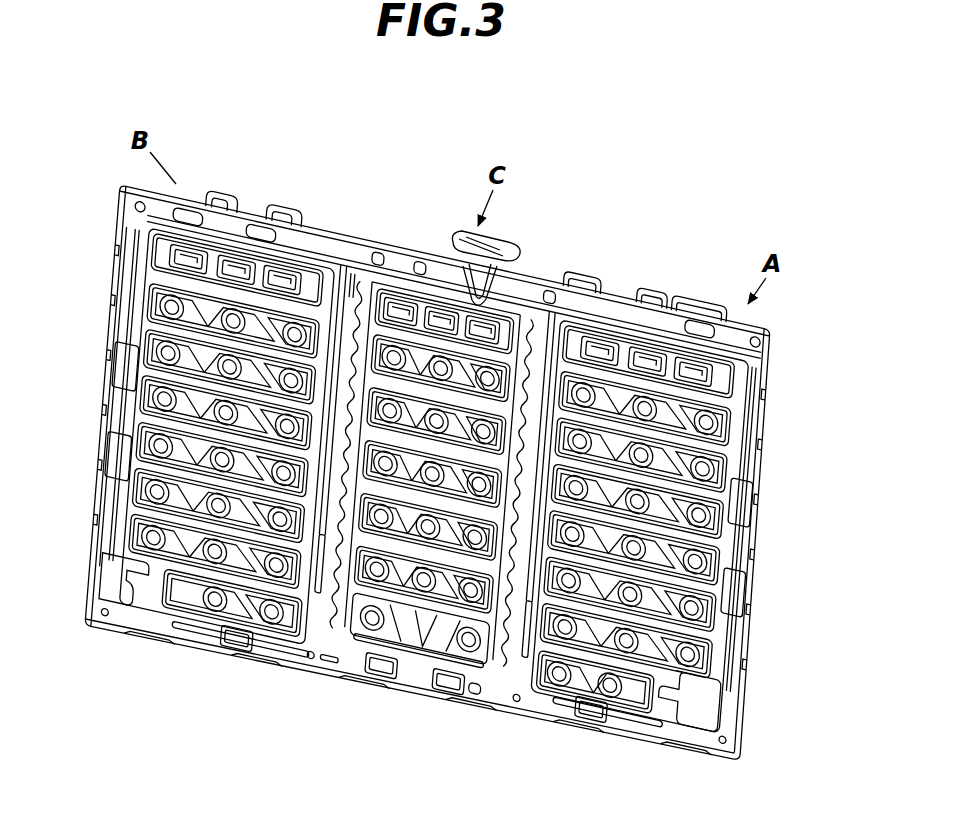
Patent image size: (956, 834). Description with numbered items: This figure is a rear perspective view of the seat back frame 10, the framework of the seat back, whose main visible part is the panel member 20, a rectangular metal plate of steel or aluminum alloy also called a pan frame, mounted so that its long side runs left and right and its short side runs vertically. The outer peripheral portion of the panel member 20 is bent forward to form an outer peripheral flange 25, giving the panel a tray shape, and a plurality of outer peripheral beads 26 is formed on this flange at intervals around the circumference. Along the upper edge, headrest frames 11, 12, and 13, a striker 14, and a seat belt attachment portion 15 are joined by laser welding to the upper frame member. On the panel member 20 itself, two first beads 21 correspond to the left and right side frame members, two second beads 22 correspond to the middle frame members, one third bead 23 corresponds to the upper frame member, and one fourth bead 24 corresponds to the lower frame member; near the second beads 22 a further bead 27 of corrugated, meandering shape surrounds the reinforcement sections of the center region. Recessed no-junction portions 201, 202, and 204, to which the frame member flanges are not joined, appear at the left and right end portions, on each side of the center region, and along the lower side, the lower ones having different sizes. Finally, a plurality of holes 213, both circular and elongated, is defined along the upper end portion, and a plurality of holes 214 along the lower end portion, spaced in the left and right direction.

The seat back frame 10 is at (350, 152).
The headrest frame 11 is at (660, 290).
The headrest frame 12 is at (226, 184).
The headrest frame 13 is at (488, 240).
The striker 14 is at (474, 300).
The seat belt attachment portion 15 is at (586, 272).
The panel member 20 is at (345, 694).
The first bead 21 is at (134, 416).
The second bead 22 is at (344, 250).
The third bead 23 is at (318, 255).
The fourth bead 24 is at (196, 636).
The outer peripheral flange 25 is at (770, 414).
The outer peripheral bead 26 is at (112, 290).
The other bead 27 is at (352, 258).
The no-junction portion 201 is at (120, 370).
The no-junction portion 202 is at (300, 592).
The no-junction portion 204 is at (240, 648).
The hole 213 is at (136, 203).
The hole 214 is at (104, 613).